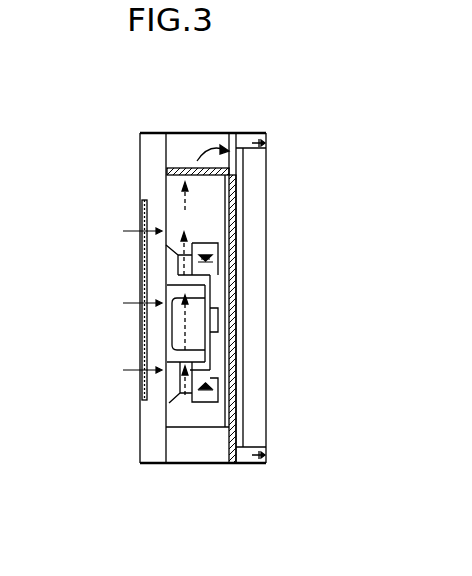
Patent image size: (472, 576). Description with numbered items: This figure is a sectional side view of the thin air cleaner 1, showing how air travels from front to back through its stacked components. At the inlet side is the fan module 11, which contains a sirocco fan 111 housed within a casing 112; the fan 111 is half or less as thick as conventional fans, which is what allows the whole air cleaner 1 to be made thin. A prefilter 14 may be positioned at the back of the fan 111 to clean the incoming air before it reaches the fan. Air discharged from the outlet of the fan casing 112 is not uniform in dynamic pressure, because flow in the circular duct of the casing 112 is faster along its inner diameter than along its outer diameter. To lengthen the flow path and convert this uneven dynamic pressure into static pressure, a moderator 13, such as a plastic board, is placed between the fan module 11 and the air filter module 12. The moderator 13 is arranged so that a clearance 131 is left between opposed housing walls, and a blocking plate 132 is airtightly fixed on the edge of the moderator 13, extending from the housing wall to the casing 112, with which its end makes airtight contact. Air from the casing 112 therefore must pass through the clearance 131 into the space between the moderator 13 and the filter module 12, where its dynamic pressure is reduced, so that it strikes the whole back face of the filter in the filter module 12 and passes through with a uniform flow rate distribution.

The air cleaner 1 is at (140, 152).
The fan module 11 is at (177, 193).
The sirocco fan 111 is at (197, 263).
The casing 112 is at (203, 420).
The air filter module 12 is at (253, 347).
The moderator 13 is at (232, 464).
The clearance 131 is at (230, 147).
The blocking plate 132 is at (183, 166).
The prefilter 14 is at (141, 334).